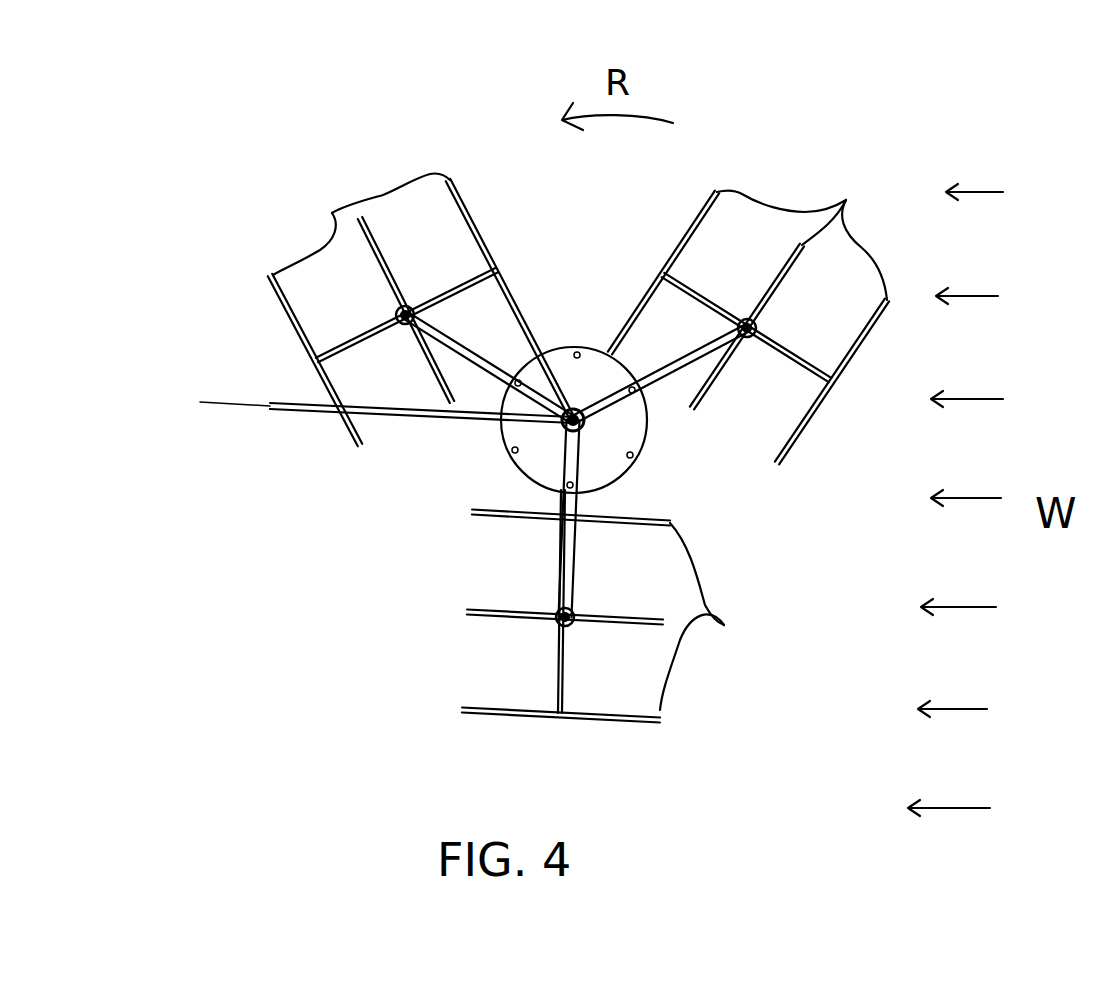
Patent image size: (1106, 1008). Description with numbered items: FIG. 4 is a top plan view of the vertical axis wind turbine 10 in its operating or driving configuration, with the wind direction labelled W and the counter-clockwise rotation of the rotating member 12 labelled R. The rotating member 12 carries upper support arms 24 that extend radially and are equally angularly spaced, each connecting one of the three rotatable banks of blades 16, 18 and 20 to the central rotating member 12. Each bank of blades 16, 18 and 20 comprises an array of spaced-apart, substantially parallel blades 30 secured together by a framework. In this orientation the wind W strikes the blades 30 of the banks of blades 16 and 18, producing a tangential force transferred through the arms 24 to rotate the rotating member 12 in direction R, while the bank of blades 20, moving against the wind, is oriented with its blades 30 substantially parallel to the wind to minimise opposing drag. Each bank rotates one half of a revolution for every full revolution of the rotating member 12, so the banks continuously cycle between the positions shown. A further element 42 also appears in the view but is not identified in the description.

The vertical axis wind turbine 10 is at (190, 85).
The rotating member 12 is at (492, 468).
The bank of blades 16 is at (798, 165).
The bank of blades 18 is at (397, 147).
The bank of blades 20 is at (413, 700).
The upper support arms 24 is at (495, 372).
The blades 30 is at (332, 213).
The shaft 42 is at (303, 410).